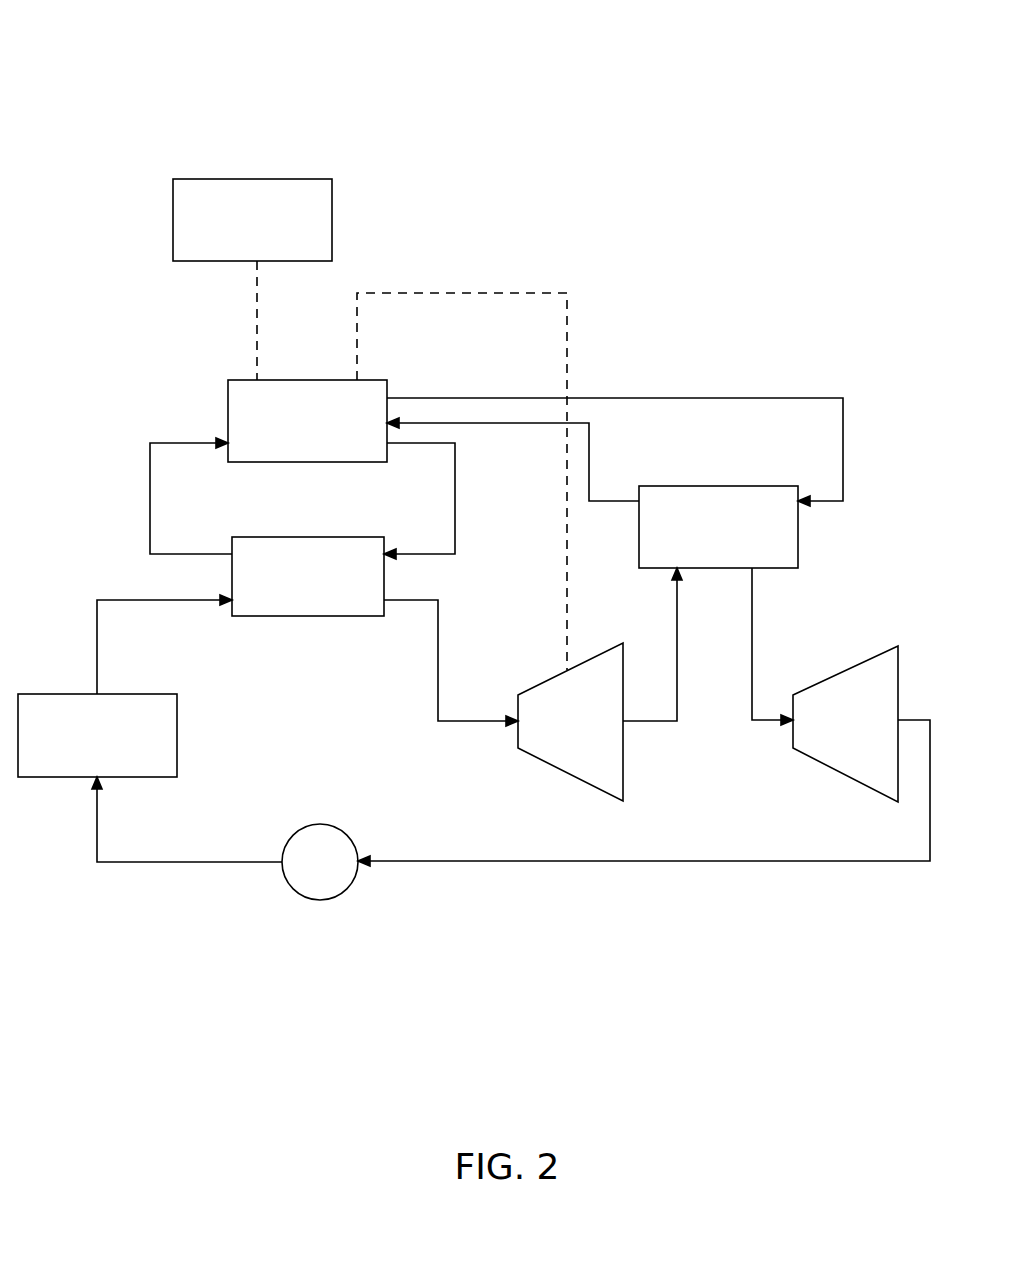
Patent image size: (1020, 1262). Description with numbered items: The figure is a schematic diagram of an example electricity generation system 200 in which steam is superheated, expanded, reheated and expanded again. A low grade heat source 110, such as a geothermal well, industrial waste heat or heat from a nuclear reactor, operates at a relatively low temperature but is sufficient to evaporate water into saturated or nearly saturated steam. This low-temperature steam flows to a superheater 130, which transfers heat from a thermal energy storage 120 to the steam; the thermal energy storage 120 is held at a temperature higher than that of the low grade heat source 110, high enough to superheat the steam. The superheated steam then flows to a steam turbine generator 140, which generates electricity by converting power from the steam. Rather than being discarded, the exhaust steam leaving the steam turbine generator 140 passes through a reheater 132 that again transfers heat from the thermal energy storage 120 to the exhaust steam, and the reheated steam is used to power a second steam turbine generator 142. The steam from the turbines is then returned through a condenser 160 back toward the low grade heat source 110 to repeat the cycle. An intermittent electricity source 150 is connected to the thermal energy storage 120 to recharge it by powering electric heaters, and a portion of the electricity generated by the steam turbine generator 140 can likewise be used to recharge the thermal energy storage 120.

The system 200 is at (166, 60).
The low grade heat source 110 is at (97, 735).
The thermal energy storage 120 is at (307, 421).
The superheater 130 is at (308, 576).
The reheater 132 is at (718, 527).
The steam turbine generator 140 is at (570, 722).
The second steam turbine generator 142 is at (845, 724).
The intermittent electricity source 150 is at (252, 220).
The condenser 160 is at (320, 862).